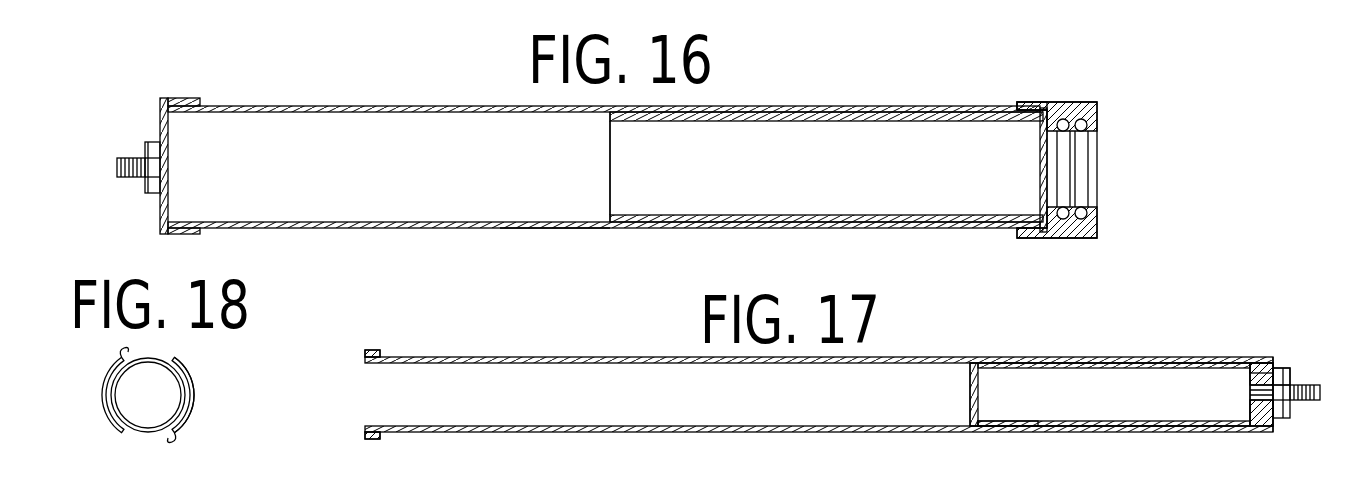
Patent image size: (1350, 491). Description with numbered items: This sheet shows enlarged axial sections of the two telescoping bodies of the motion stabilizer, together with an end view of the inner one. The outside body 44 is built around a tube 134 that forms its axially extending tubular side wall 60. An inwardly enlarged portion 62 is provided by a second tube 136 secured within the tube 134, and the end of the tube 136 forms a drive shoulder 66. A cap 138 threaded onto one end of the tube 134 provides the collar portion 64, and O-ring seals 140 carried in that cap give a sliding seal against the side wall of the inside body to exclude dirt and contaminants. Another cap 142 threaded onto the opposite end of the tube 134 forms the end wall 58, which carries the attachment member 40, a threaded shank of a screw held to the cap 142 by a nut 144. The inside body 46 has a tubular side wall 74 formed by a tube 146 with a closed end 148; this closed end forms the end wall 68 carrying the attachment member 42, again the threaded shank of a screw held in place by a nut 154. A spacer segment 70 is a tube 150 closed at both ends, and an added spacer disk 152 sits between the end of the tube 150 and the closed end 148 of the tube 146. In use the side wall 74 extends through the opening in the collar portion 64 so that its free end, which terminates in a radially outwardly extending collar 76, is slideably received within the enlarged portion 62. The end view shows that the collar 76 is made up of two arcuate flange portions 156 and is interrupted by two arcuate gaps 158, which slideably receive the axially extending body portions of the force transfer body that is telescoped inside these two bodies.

In FIG. 16, the attachment member 40 is at (125, 150).
In FIG. 17, the attachment member 42 is at (1320, 395).
In FIG. 16, the outside body 44 is at (432, 100).
In FIG. 17, the inside body 46 is at (1045, 340).
In FIG. 18, the inside body 46 is at (205, 368).
In FIG. 16, the end wall 58 is at (168, 135).
In FIG. 16, the tubular side wall 60 is at (385, 230).
In FIG. 16, the inwardly enlarged portion 62 is at (825, 122).
In FIG. 16, the collar portion 64 is at (1097, 112).
In FIG. 16, the drive shoulder 66 is at (610, 158).
In FIG. 17, the end wall 68 is at (1275, 362).
In FIG. 17, the spacer segment 70 is at (1135, 400).
In FIG. 17, the tubular side wall 74 is at (670, 357).
In FIG. 17, the radially outwardly extending collar 76 is at (370, 350).
In FIG. 18, the radially outwardly extending collar 76 is at (185, 415).
In FIG. 16, the tube 134 is at (560, 229).
In FIG. 16, the tube 136 is at (820, 222).
In FIG. 16, the cap 138 is at (1040, 102).
In FIG. 16, the O-ring seals 140 is at (1063, 156).
In FIG. 16, the cap 142 is at (190, 98).
In FIG. 16, the nut 144 is at (150, 195).
In FIG. 17, the tube 146 is at (730, 433).
In FIG. 17, the closed end 148 is at (1280, 418).
In FIG. 17, the tube 150 is at (1010, 418).
In FIG. 17, the spacer disk 152 is at (1258, 433).
In FIG. 17, the nut 154 is at (1290, 372).
In FIG. 17, the arcuate flange portions 156 is at (380, 352).
In FIG. 18, the arcuate flange portions 156 is at (180, 395).
In FIG. 18, the arcuate gaps 158 is at (126, 350).